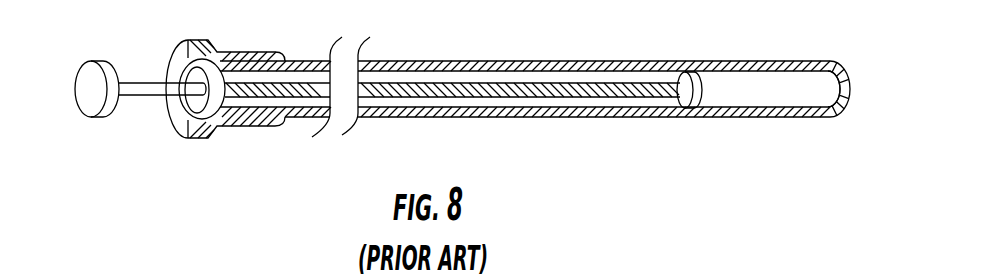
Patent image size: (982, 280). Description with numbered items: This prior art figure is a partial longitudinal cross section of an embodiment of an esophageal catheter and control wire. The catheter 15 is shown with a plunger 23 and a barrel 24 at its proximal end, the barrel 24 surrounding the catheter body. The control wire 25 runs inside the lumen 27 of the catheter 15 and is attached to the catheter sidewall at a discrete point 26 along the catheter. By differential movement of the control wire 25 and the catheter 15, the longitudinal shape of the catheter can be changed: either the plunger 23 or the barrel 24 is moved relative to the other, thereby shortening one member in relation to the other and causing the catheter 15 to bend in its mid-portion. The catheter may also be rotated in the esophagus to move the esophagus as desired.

The catheter 15 is at (530, 61).
The plunger 23 is at (140, 85).
The barrel 24 is at (223, 53).
The control wire 25 is at (563, 97).
The discrete attachment point 26 is at (693, 107).
The lumen 27 is at (732, 99).